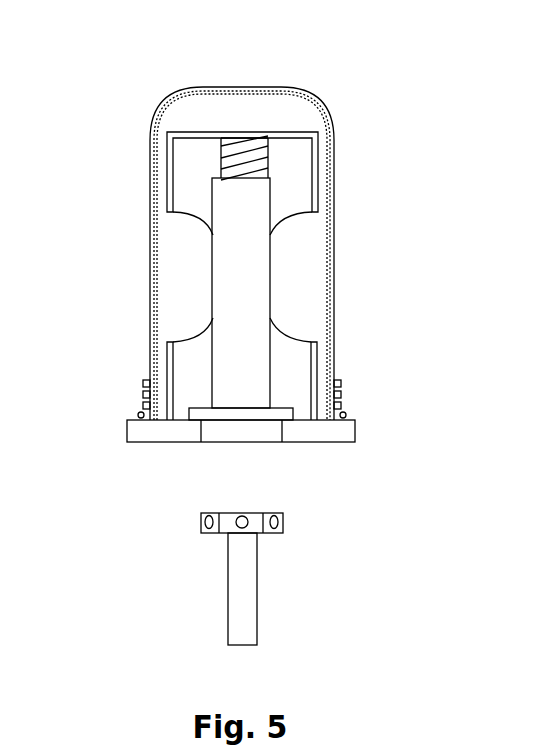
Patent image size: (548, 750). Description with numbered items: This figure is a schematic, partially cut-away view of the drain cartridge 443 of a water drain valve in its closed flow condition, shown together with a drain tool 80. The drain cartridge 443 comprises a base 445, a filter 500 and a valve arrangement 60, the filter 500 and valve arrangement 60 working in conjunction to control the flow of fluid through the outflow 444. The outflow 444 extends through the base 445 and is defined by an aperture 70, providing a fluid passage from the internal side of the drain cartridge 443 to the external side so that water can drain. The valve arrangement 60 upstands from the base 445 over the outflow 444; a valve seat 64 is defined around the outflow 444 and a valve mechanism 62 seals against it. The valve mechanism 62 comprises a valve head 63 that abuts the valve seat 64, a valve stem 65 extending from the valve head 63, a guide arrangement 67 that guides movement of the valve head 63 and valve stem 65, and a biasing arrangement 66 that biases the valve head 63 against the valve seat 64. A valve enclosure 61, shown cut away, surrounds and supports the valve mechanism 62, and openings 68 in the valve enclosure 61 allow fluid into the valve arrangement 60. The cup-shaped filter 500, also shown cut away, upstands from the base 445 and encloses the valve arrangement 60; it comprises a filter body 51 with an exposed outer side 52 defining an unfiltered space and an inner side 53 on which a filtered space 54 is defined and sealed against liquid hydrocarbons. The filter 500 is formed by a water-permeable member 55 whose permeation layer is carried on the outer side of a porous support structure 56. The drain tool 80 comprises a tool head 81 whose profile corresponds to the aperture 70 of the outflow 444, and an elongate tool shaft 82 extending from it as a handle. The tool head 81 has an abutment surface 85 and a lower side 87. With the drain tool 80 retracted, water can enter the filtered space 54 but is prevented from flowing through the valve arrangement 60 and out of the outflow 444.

The drain cartridge 443 is at (130, 68).
The filter body 51 is at (150, 123).
The support structure 56 is at (150, 150).
The water-permeable member 55 is at (150, 190).
The filter 500 is at (149, 243).
The openings 68 is at (178, 270).
The valve mechanism 62 is at (218, 307).
The valve stem 65 is at (218, 342).
The base 445 is at (145, 398).
The valve enclosure 61 is at (332, 143).
The valve arrangement 60 is at (324, 202).
The exposed outer side 52 is at (335, 238).
The inner side 53 is at (328, 283).
The filtered space 54 is at (318, 320).
The valve head 63 is at (341, 394).
The valve seat 64 is at (197, 420).
The aperture 70 is at (232, 422).
The outflow 444 is at (278, 430).
The biasing arrangement 66 is at (255, 145).
The guide arrangement 67 is at (229, 145).
The drain tool 80 is at (292, 564).
The tool head 81 is at (200, 522).
The lower side 87 is at (208, 533).
The abutment surface 85 is at (284, 518).
The tool shaft 82 is at (227, 628).